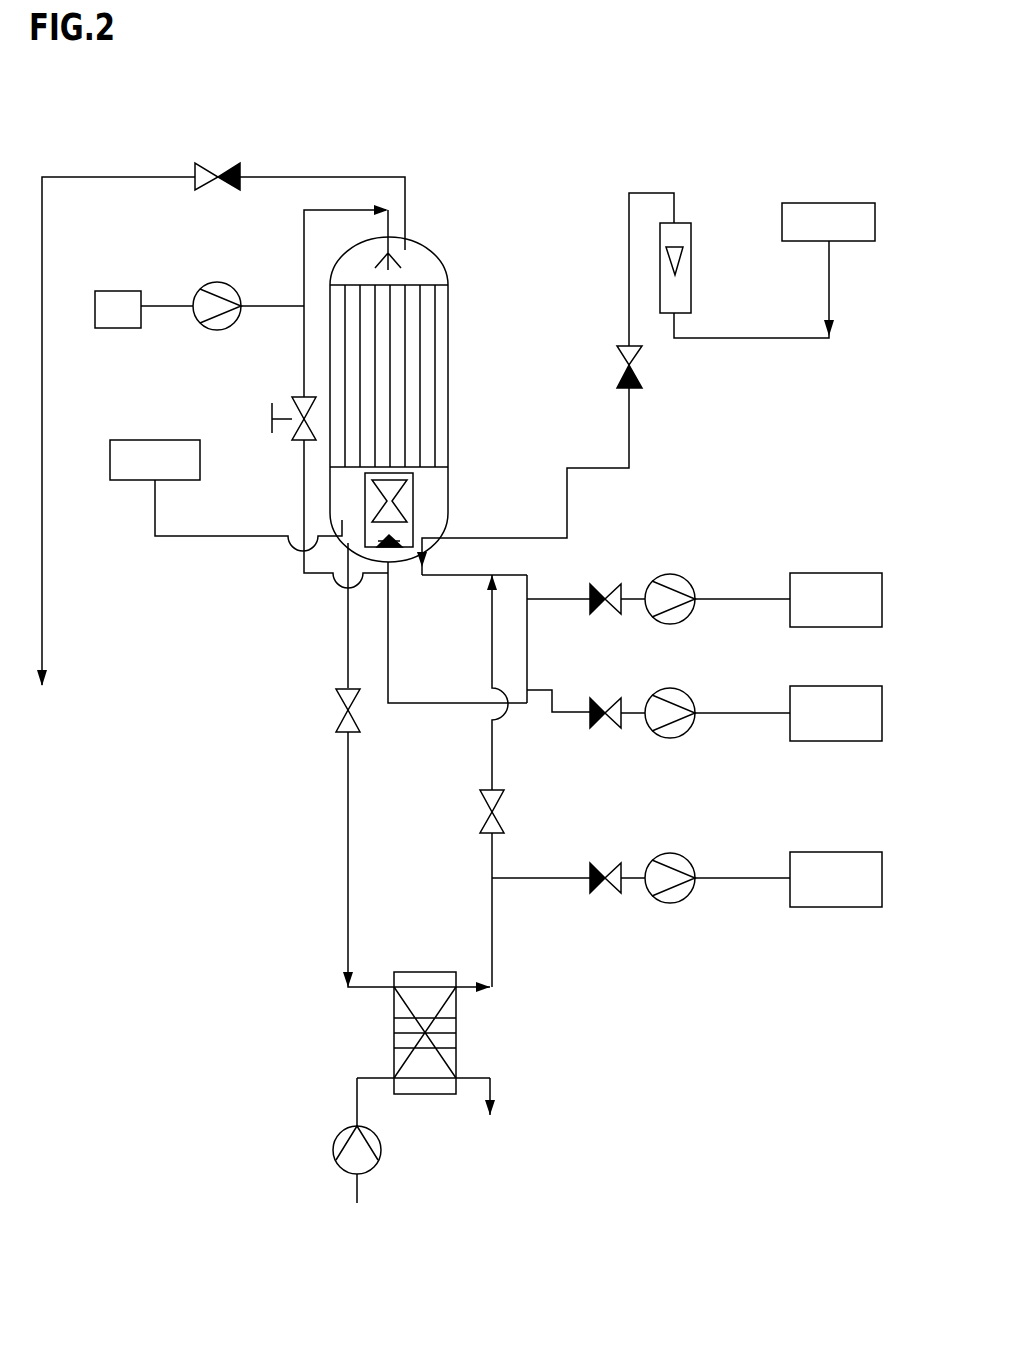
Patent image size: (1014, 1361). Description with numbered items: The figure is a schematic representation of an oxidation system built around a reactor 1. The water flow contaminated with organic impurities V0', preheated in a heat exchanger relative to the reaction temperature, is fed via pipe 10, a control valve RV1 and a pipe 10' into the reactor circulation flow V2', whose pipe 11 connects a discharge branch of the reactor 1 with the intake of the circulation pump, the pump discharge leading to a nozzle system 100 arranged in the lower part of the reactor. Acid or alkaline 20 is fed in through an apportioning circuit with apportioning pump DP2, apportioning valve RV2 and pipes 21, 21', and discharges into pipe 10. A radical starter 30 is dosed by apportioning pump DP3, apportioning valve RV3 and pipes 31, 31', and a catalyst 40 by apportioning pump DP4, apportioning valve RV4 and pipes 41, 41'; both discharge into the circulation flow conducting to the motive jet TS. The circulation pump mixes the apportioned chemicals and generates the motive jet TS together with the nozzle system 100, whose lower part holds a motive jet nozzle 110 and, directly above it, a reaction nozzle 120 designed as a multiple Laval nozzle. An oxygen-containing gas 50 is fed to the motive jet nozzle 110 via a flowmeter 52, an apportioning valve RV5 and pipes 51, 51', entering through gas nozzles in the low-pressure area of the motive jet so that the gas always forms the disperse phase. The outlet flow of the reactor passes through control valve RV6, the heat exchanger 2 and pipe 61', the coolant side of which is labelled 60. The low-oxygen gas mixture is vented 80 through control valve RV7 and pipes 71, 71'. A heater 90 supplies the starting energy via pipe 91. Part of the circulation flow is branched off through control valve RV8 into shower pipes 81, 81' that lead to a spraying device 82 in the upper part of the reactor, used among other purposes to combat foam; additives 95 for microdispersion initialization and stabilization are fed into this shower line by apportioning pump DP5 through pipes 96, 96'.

The reactor 1 is at (425, 305).
The heat exchanger 2 is at (447, 1027).
The pipe 10 is at (516, 910).
The pipe 10' is at (515, 682).
The pipe 11 is at (463, 577).
The acid or alkaline 20 is at (836, 879).
The pipe 21 is at (742, 848).
The pipe 21' is at (639, 848).
The radical starter 30 is at (836, 713).
The pipe 31 is at (742, 683).
The pipe 31' is at (639, 684).
The catalyst 40 is at (836, 600).
The pipe 41 is at (742, 568).
The pipe 41' is at (639, 626).
The O2-containing gas 50 is at (828, 222).
The pipe 51 is at (780, 289).
The pipe 51' is at (648, 243).
The flowmeter 52 is at (678, 297).
The coolant outlet line 60 is at (493, 1087).
The pipe 61' is at (341, 765).
The pipe 71 is at (322, 189).
The pipe 71' is at (118, 385).
The vent 80 is at (42, 699).
The shower pipe 81 is at (322, 514).
The shower pipe 81' is at (272, 351).
The spraying device 82 is at (390, 227).
The heater 90 is at (155, 460).
The pipe 91 is at (150, 518).
The additives 95 is at (118, 309).
The pipe 96 is at (167, 327).
The pipe 96' is at (272, 327).
The nozzle system 100 is at (412, 498).
The motive jet nozzle 110 is at (395, 535).
The reaction nozzle 120 is at (390, 488).
The control valve RV1 is at (500, 810).
The apportioning valve RV2 is at (607, 892).
The apportioning valve RV3 is at (608, 725).
The apportioning valve RV4 is at (605, 583).
The apportioning valve RV5 is at (617, 366).
The control valve RV6 is at (338, 708).
The control valve RV7 is at (220, 162).
The control valve RV8 is at (272, 418).
The apportioning pump DP2 is at (681, 872).
The apportioning pump DP3 is at (681, 707).
The apportioning pump DP4 is at (681, 593).
The apportioning pump DP5 is at (216, 286).
The motive jet TS is at (387, 568).
The water flow contaminated with organic impurities V0' is at (453, 1092).
The reactor circulation flow V2' is at (406, 639).